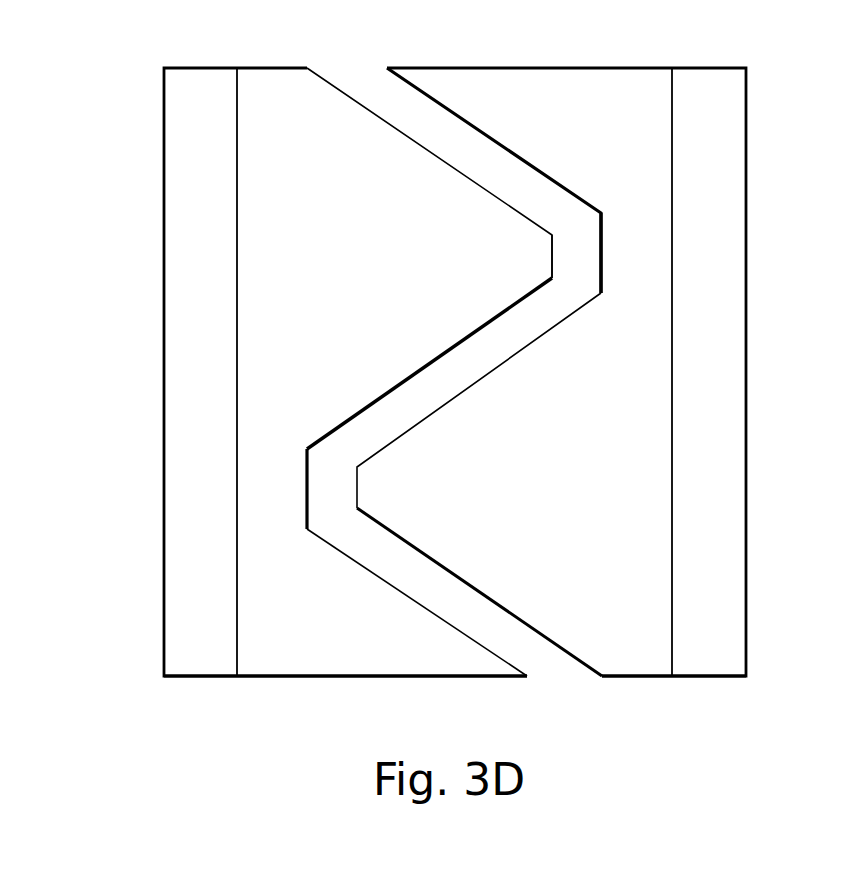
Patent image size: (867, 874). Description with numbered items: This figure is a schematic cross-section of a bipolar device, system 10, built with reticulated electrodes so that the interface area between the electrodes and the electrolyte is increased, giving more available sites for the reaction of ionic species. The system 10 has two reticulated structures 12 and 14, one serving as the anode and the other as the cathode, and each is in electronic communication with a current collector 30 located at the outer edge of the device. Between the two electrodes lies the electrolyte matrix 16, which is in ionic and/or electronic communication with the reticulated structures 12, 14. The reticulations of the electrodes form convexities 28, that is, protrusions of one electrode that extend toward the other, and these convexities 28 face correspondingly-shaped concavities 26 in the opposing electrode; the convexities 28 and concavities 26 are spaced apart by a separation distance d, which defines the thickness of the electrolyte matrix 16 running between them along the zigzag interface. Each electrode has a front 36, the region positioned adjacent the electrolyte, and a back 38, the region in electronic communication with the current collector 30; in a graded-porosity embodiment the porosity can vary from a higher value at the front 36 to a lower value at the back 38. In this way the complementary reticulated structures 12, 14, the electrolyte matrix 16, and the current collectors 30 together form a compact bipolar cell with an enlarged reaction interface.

The system 10 is at (126, 175).
The reticulated structure 12 is at (308, 676).
The reticulated structure 14 is at (618, 676).
The electrolyte matrix 16 is at (358, 70).
The concavities 26 is at (586, 238).
The convexities 28 is at (534, 308).
The current collector 30 is at (199, 676).
The front 36 is at (551, 235).
The back 38 is at (285, 299).
The separation distance d is at (493, 102).